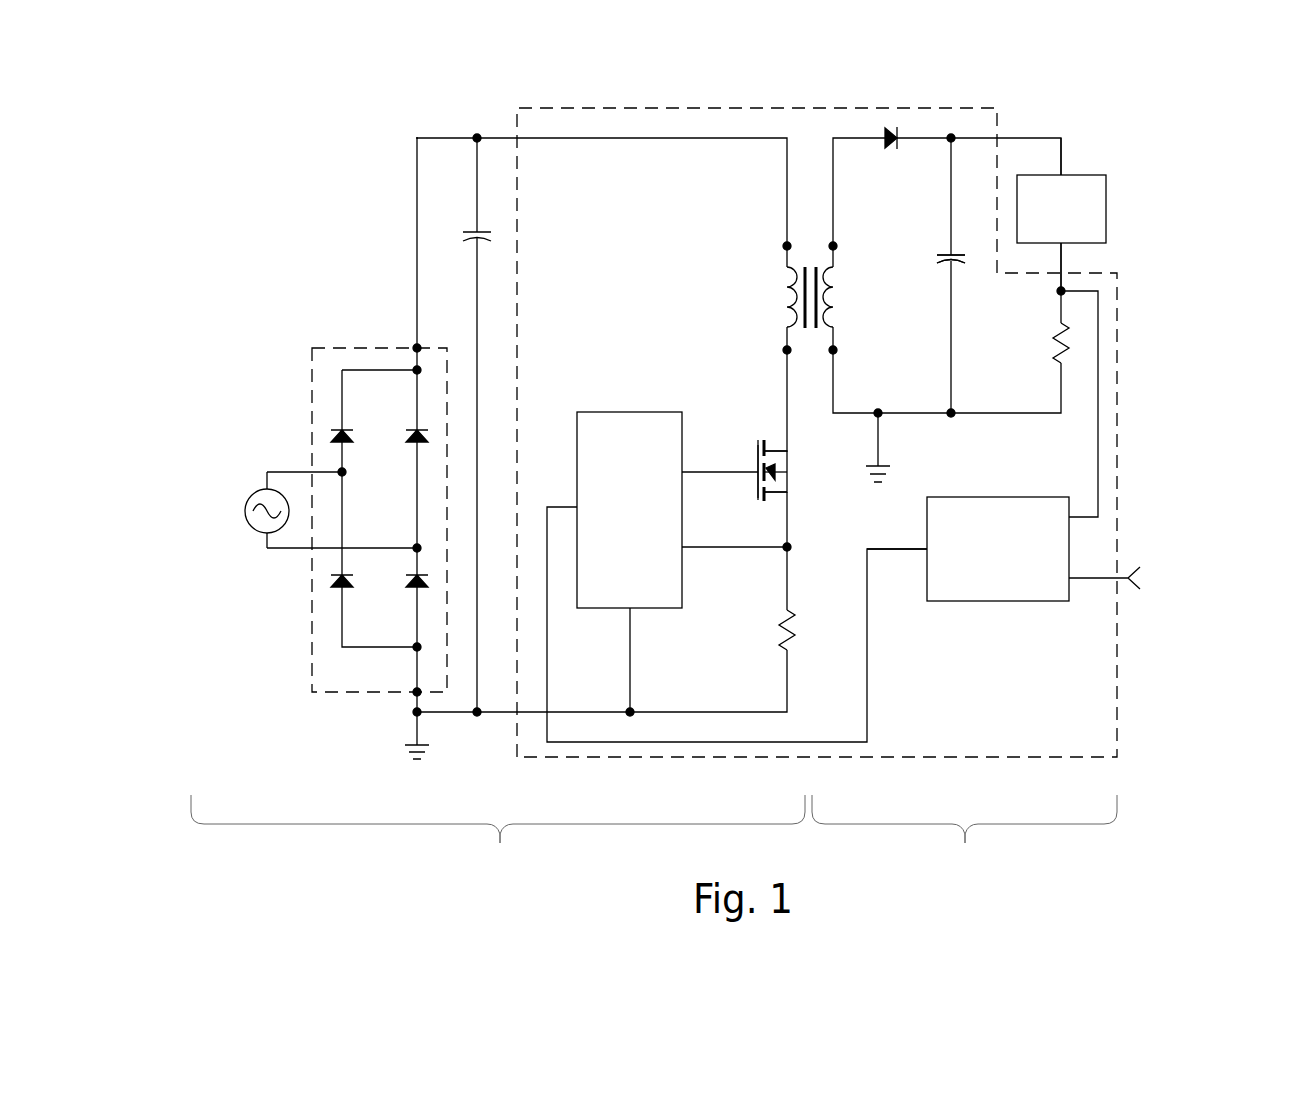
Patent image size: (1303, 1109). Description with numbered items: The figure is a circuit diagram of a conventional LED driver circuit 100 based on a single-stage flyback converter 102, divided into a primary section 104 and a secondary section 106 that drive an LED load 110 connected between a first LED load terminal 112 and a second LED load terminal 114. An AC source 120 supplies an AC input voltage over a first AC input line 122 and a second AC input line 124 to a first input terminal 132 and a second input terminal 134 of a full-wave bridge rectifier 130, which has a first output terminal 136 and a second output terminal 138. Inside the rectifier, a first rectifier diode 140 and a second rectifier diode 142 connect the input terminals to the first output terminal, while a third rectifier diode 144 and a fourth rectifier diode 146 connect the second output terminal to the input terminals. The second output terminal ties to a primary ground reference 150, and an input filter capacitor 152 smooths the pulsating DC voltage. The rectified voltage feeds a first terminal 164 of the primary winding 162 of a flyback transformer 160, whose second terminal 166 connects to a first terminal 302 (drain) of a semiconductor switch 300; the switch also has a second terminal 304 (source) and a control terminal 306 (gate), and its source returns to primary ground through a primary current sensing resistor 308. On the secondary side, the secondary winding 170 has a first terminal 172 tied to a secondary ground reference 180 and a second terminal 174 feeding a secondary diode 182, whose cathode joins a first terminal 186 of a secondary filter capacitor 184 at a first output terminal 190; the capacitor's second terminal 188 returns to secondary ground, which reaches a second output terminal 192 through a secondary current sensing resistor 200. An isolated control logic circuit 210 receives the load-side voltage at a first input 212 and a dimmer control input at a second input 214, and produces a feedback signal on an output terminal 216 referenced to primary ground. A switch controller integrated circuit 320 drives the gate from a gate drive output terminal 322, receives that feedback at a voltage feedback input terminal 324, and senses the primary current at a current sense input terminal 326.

The LED driver circuit 100 is at (340, 123).
The flyback converter 102 is at (556, 107).
The primary section 104 is at (500, 843).
The secondary section 106 is at (965, 843).
The LED load 110 is at (1078, 174).
The LED load first terminal 112 is at (1061, 174).
The LED load terminal 114 is at (1062, 246).
The AC source 120 is at (255, 492).
The first AC input line 122 is at (296, 471).
The second AC input line 124 is at (296, 551).
The full-wave bridge rectifier 130 is at (350, 347).
The first input terminal 132 is at (345, 476).
The second input terminal 134 is at (416, 546).
The first output terminal 136 is at (416, 347).
The second output terminal 138 is at (414, 701).
The first rectifier diode 140 is at (352, 436).
The second rectifier diode 142 is at (409, 441).
The third rectifier diode 144 is at (352, 583).
The fourth rectifier diode 146 is at (409, 588).
The primary ground reference 150 is at (432, 746).
The input filter capacitor 152 is at (468, 236).
The flyback transformer 160 is at (812, 252).
The primary winding 162 is at (787, 288).
The first terminal of the primary winding 164 is at (785, 246).
The second terminal of the primary winding 166 is at (785, 350).
The secondary winding 170 is at (836, 300).
The first terminal of the secondary winding 172 is at (836, 350).
The second terminal of the secondary winding 174 is at (836, 246).
The secondary ground reference 180 is at (868, 466).
The secondary diode 182 is at (892, 148).
The secondary filter capacitor 184 is at (936, 258).
The first terminal of the secondary filter capacitor 186 is at (956, 256).
The second terminal of the secondary filter capacitor 188 is at (956, 264).
The first output terminal of the LED driver circuit 190 is at (951, 136).
The second output terminal of the LED driver circuit 192 is at (951, 410).
The secondary current sensing resistor 200 is at (1058, 343).
The isolated control logic circuit 210 is at (997, 603).
The first input of the isolated control logic circuit 212 is at (1072, 516).
The second input of the isolated control logic circuit 214 is at (1072, 579).
The output terminal of the isolated control logic circuit 216 is at (925, 548).
The semiconductor switch 300 is at (755, 451).
The first terminal of the semiconductor switch 302 is at (773, 450).
The second terminal of the semiconductor switch 304 is at (776, 494).
The control terminal of the semiconductor switch 306 is at (757, 478).
The primary current sensing resistor 308 is at (790, 637).
The switch controller integrated circuit 320 is at (612, 410).
The gate drive output terminal 322 is at (686, 472).
The voltage feedback input terminal 324 is at (576, 507).
The current sense input terminal 326 is at (686, 547).